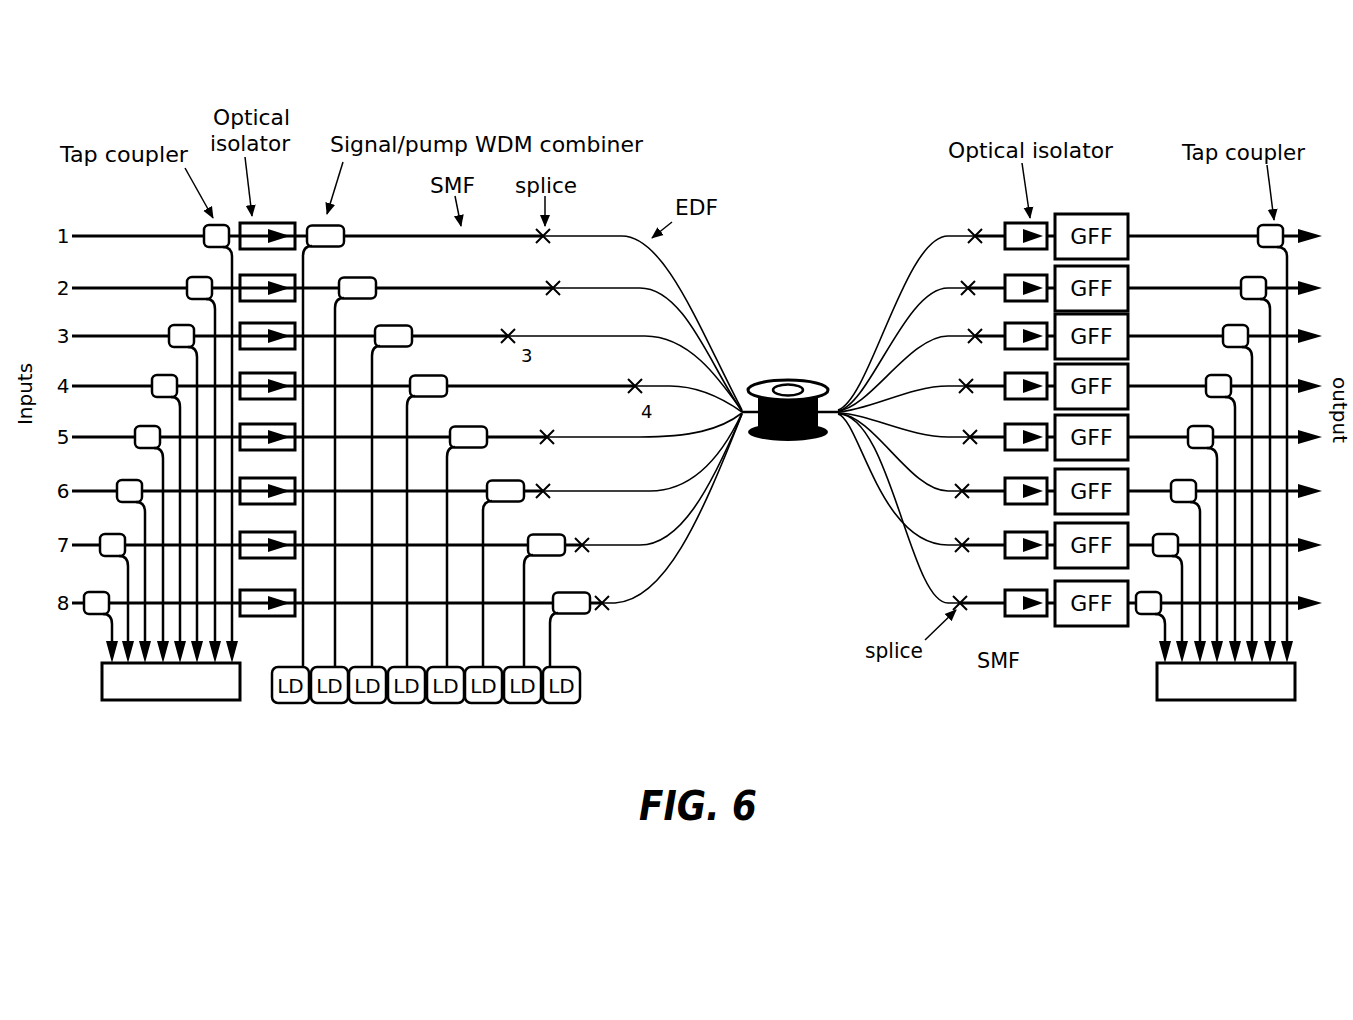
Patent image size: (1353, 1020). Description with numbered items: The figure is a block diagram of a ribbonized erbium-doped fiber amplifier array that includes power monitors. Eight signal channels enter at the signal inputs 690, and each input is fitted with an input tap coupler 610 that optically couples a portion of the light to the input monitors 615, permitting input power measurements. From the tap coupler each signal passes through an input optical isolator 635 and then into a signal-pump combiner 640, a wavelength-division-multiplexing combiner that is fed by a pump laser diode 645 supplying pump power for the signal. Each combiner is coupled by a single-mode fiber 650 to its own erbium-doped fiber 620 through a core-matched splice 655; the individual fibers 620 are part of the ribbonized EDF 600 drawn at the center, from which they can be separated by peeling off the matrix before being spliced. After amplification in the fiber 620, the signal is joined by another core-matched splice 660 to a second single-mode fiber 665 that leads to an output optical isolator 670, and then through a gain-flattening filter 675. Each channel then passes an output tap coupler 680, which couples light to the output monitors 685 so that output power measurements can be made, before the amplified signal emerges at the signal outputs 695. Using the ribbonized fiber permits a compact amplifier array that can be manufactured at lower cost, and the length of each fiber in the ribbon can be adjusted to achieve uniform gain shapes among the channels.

The ribbonized EDF 600 is at (805, 442).
The input tap couplers 610 is at (208, 222).
The input monitors 615 is at (172, 701).
The EDF 620 is at (668, 275).
The input optical isolators 635 is at (262, 222).
The signal-pump combiners 640 is at (330, 223).
The pump laser diodes 645 is at (412, 703).
The single-mode fiber 650 is at (380, 240).
The core-matched splice 655 is at (547, 243).
The core-matched splice 660 is at (972, 230).
The single-mode fiber 665 is at (989, 612).
The output optical isolators 670 is at (1022, 222).
The gain-flattening filter 675 is at (1092, 213).
The output tap couplers 680 is at (1266, 224).
The output monitors 685 is at (1250, 701).
The signal inputs 690 is at (165, 244).
The signal outputs 695 is at (1300, 232).